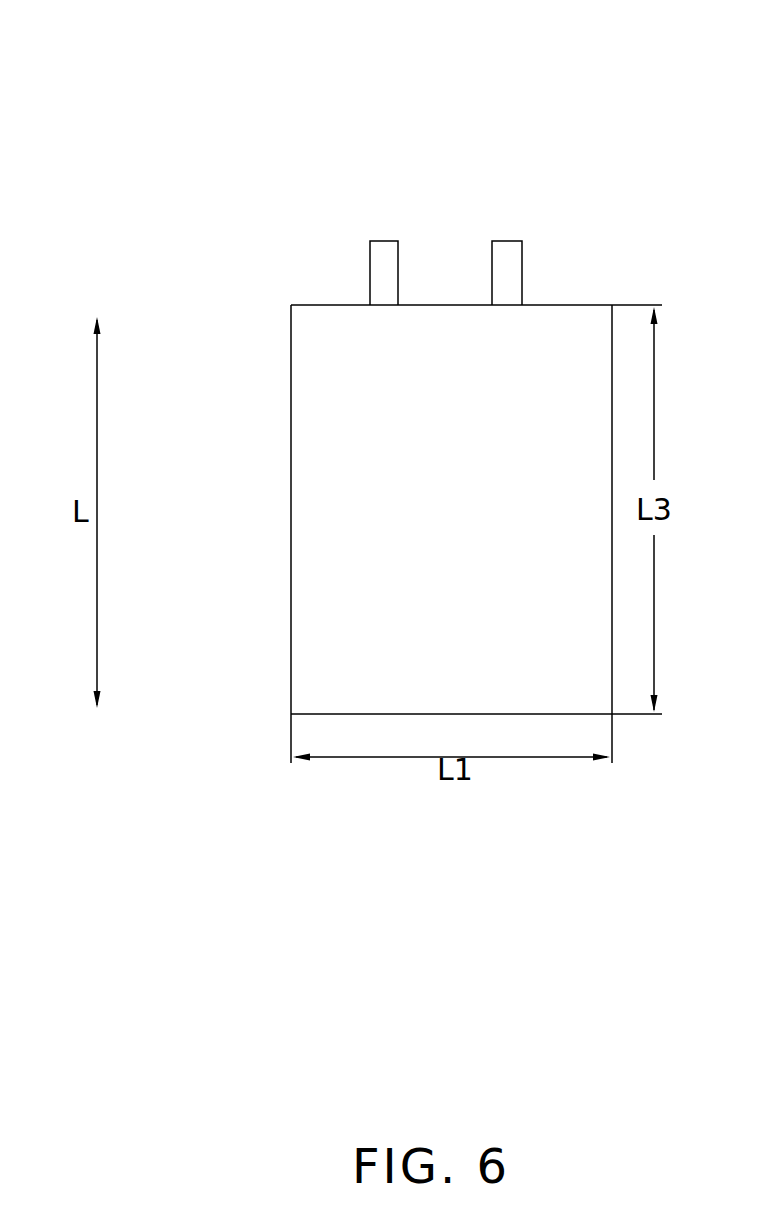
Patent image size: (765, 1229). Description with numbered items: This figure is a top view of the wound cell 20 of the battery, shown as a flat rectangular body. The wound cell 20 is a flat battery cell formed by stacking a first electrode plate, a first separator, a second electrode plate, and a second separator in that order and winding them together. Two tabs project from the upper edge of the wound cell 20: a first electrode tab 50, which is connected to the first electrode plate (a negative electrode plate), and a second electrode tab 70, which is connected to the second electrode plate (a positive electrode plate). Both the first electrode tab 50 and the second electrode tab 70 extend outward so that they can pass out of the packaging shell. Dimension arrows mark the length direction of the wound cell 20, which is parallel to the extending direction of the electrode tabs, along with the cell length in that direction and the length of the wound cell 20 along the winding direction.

The wound cell 20 is at (505, 40).
The first electrode tab 50 is at (380, 253).
The second electrode tab 70 is at (506, 258).